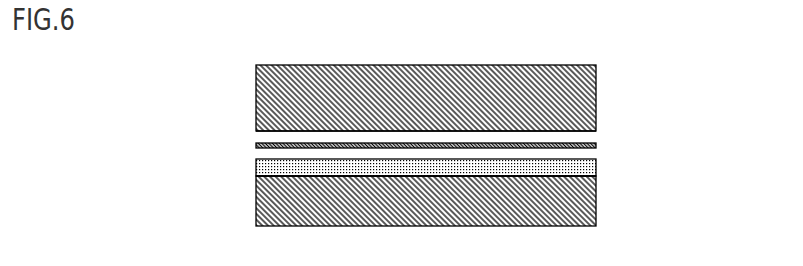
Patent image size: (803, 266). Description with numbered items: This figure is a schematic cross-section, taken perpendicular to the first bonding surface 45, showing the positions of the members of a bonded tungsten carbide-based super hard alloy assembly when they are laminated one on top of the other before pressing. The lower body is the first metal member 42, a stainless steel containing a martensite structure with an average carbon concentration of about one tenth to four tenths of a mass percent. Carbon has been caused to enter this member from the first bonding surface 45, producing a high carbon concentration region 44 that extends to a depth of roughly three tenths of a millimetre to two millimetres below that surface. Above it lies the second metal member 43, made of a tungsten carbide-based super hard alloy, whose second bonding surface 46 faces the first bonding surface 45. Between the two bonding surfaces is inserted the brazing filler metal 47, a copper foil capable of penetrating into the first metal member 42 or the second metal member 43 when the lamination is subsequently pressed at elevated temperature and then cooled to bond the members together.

The first metal member 42 is at (680, 216).
The second metal member 43 is at (680, 72).
The high carbon concentration region 44 is at (293, 176).
The first bonding surface 45 is at (300, 160).
The second bonding surface 46 is at (276, 130).
The brazing filler metal 47 is at (584, 144).